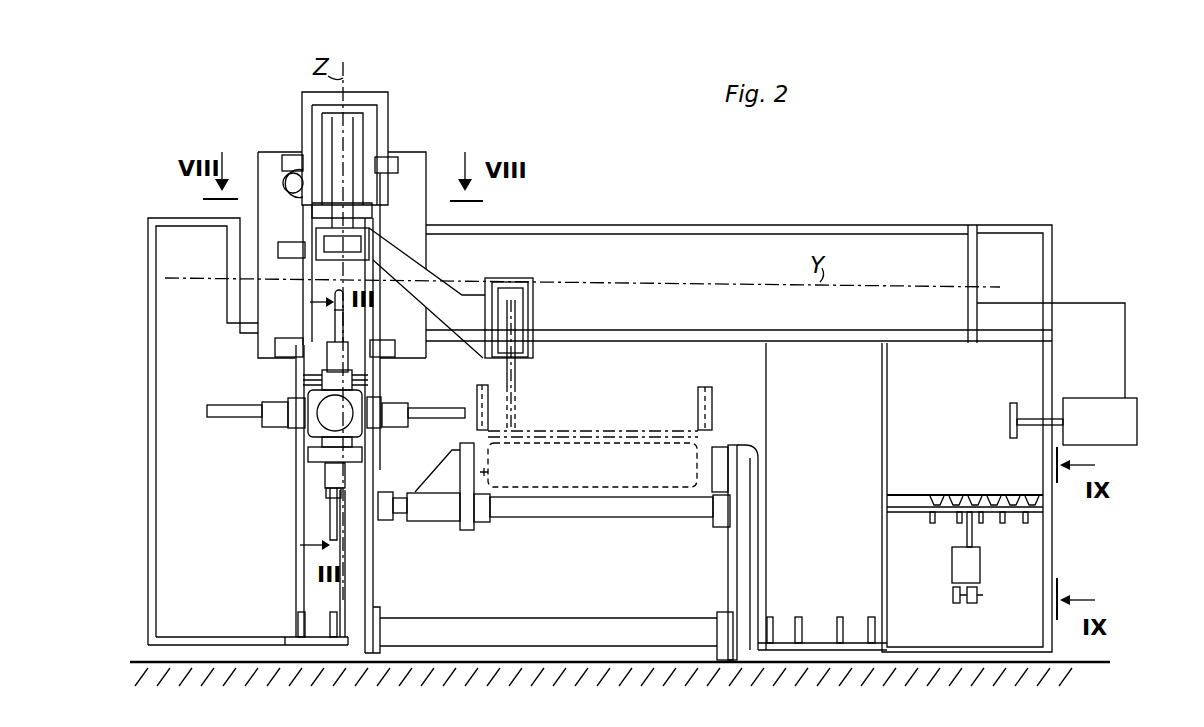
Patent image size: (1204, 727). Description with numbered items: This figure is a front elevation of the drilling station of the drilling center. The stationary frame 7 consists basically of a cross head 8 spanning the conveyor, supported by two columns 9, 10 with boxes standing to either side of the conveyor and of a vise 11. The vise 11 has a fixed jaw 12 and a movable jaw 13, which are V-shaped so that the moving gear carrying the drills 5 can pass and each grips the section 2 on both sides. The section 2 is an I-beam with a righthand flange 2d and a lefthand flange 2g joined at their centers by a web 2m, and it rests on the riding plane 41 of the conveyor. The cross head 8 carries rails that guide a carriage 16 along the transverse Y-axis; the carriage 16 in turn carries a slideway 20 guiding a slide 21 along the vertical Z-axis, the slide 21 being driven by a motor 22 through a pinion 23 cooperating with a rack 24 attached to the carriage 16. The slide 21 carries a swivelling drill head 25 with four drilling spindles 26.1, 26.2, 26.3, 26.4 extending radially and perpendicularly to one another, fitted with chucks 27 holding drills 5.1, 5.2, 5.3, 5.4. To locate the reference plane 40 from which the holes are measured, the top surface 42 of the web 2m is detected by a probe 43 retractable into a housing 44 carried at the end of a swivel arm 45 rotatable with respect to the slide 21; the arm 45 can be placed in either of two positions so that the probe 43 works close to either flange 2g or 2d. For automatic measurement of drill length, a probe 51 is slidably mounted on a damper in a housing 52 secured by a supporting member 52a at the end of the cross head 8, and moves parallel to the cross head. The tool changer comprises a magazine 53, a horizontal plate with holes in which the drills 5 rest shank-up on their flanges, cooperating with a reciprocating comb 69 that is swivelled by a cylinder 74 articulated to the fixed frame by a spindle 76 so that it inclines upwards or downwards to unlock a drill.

The section 2 is at (715, 418).
The righthand flange 2d is at (707, 431).
The web 2m is at (613, 440).
The lefthand flange 2g is at (488, 472).
The drills 5 is at (1007, 523).
The drill 5.1 is at (432, 398).
The drill 5.2 is at (330, 523).
The drill 5.3 is at (228, 408).
The drill 5.4 is at (333, 316).
The stationary frame 7 is at (951, 223).
The cross head 8 is at (888, 246).
The column 9 is at (283, 612).
The column 10 is at (865, 593).
The vise 11 is at (753, 548).
The fixed jaw 12 is at (725, 520).
The movable jaw 13 is at (472, 522).
The carriage 16 is at (417, 185).
The slideway 20 is at (292, 155).
The slide 21 is at (350, 317).
The motor 22 is at (280, 194).
The pinion 23 is at (283, 181).
The rack 24 is at (313, 160).
The swivelling drill head 25 is at (358, 440).
The drilling spindle 26.1 is at (377, 403).
The drilling spindle 26.2 is at (322, 483).
The drilling spindle 26.3 is at (287, 430).
The drilling spindle 26.4 is at (325, 370).
The chucks 27 is at (270, 418).
The reference plane 40 is at (648, 440).
The riding plane 41 is at (637, 490).
The top surface 42 is at (534, 437).
The probe 43 is at (513, 377).
The housing 44 is at (537, 279).
The swivel arm 45 is at (432, 282).
The probe 51 is at (1023, 393).
The housing 52 is at (1127, 408).
The supporting member 52a is at (1090, 312).
The magazine 53 is at (905, 510).
The reciprocating comb 69 is at (977, 472).
The cylinder 74 is at (955, 570).
The spindle 76 is at (980, 597).